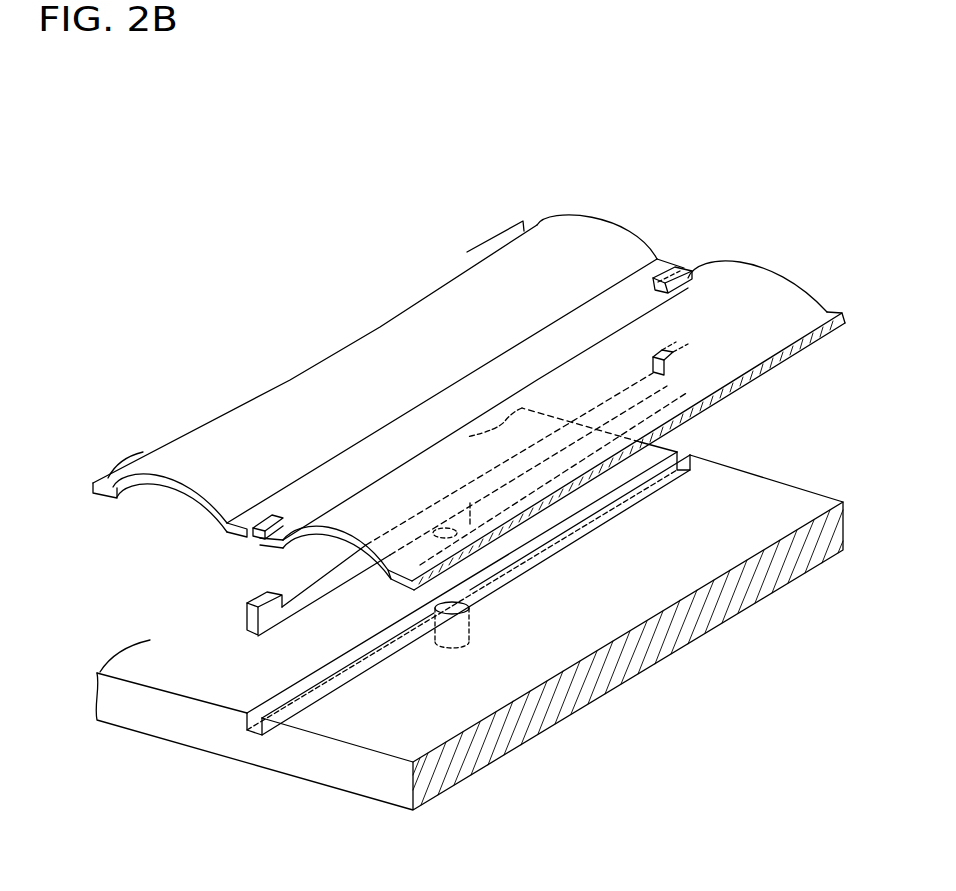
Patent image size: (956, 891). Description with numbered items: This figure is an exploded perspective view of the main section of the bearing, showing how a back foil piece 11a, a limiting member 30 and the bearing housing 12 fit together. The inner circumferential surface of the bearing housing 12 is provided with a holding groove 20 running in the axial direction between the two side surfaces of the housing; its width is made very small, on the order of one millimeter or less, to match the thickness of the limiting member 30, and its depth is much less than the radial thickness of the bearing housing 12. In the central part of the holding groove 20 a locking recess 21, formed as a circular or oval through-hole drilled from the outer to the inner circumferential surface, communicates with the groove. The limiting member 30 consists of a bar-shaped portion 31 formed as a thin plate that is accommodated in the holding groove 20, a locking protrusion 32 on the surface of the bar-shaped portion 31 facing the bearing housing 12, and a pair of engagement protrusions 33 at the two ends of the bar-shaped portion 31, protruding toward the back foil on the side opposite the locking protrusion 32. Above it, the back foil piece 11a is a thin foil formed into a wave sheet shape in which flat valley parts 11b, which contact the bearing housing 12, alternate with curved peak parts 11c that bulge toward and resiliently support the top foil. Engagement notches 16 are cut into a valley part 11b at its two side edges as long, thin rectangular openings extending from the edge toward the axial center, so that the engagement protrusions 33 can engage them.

The back foil piece 11a is at (619, 213).
The valley part 11b is at (525, 228).
The peak part 11c is at (576, 386).
The engagement notch 16 is at (681, 268).
The limiting member 30 is at (212, 612).
The bar-shaped portion 31 is at (335, 589).
The locking protrusion 32 is at (397, 576).
The engagement protrusion 33 is at (266, 596).
The bearing housing 12 is at (160, 717).
The holding groove 20 is at (348, 664).
The locking recess 21 is at (456, 650).